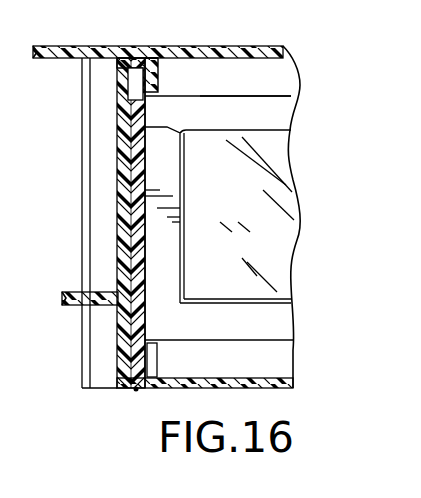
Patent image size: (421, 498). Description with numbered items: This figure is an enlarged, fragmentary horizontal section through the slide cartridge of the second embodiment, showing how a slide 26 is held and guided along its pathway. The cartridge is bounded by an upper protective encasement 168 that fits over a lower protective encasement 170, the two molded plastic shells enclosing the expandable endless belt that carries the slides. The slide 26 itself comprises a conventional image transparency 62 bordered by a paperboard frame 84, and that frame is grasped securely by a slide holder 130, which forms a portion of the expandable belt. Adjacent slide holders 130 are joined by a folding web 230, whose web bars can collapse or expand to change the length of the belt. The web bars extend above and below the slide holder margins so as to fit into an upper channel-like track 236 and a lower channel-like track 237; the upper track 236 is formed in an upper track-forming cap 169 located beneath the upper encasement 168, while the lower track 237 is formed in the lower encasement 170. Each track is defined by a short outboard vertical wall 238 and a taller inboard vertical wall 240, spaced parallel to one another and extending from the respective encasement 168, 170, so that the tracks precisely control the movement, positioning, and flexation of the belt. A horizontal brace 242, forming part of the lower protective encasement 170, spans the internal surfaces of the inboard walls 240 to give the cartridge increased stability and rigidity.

The upper protective encasement 168 is at (78, 46).
The upper channel-like track 236 is at (136, 60).
The upper track-forming cap 169 is at (159, 52).
The short outboard vertical wall 238 is at (153, 75).
The slide 26 is at (240, 83).
The paperboard frame 84 is at (267, 106).
The image transparency 62 is at (255, 201).
The taller inboard vertical wall 240 is at (117, 178).
The folding web 230 is at (132, 237).
The horizontal brace 242 is at (68, 306).
The lower channel-like track 237 is at (135, 391).
The slide holder 130 is at (293, 327).
The lower protective encasement 170 is at (268, 388).